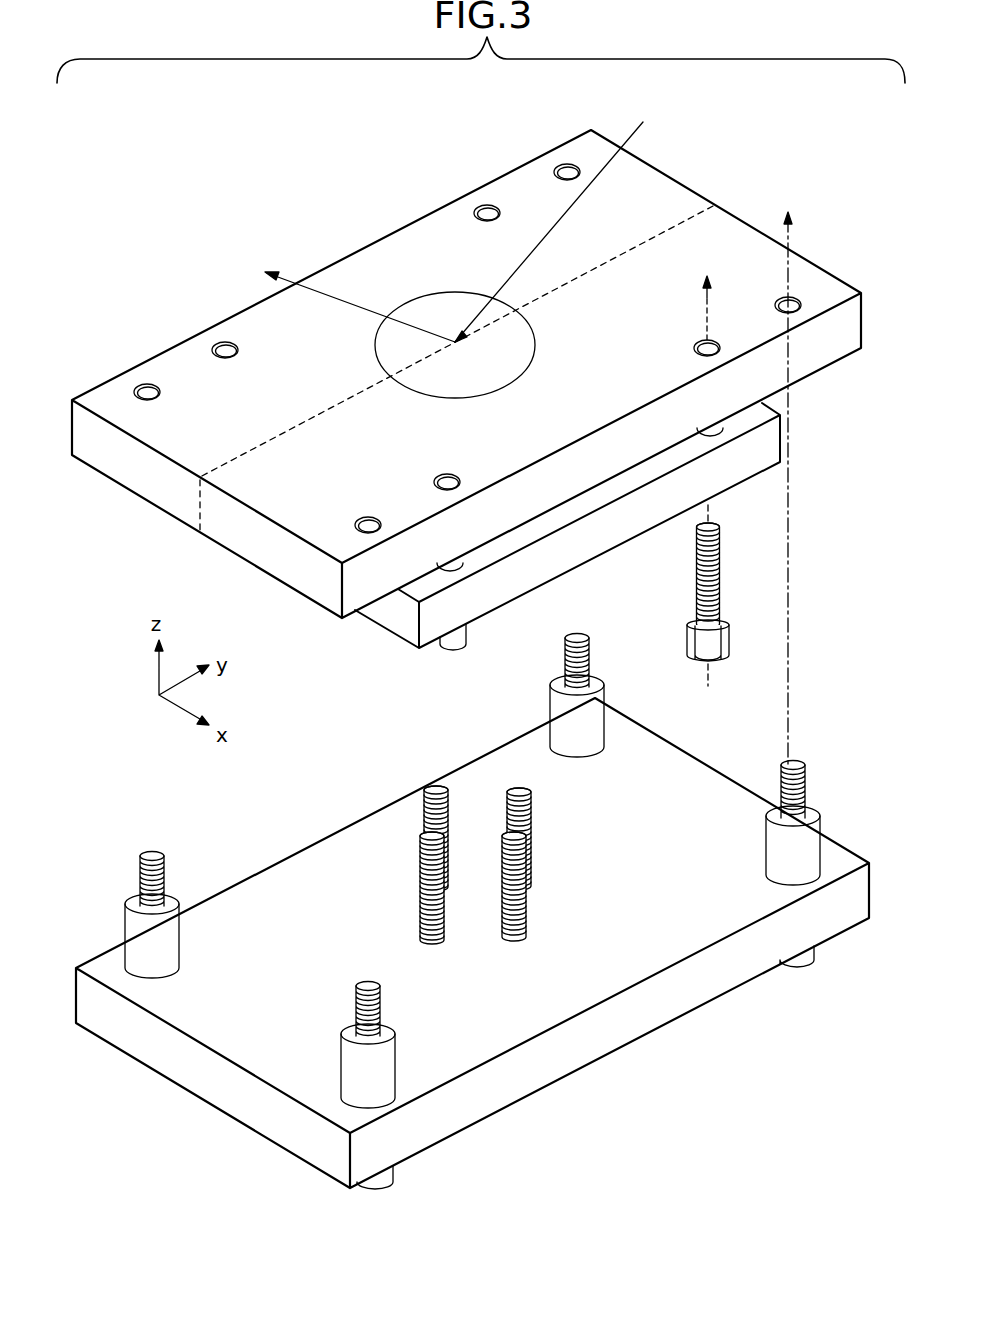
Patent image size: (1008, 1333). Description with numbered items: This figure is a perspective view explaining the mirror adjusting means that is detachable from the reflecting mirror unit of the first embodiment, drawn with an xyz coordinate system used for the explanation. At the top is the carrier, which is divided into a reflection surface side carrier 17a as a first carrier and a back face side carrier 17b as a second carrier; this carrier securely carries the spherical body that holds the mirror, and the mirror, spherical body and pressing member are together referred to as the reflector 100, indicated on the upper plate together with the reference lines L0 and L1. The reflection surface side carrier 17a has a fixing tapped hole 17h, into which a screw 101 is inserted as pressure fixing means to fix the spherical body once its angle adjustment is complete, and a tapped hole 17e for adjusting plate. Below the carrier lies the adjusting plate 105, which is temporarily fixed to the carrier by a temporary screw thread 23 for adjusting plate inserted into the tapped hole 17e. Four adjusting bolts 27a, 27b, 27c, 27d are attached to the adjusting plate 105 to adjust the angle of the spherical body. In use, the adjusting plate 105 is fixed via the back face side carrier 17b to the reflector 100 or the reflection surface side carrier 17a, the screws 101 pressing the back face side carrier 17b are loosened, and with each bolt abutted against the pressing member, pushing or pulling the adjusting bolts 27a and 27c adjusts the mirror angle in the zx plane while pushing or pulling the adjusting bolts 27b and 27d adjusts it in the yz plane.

The reflection surface side carrier 17a is at (812, 346).
The back face side carrier 17b is at (763, 444).
The tapped hole for adjusting plate 17e is at (800, 302).
The fixing tapped hole 17h is at (694, 348).
The reflector 100 is at (453, 300).
The screw 101 is at (687, 645).
The adjusting plate 105 is at (559, 1049).
The temporary screw thread for adjusting plate 23 is at (819, 948).
The adjusting bolt 27a is at (526, 910).
The adjusting bolt 27b is at (532, 820).
The adjusting bolt 27c is at (423, 814).
The adjusting bolt 27d is at (419, 917).
The reference line L0 is at (349, 295).
The reference line L1 is at (556, 218).